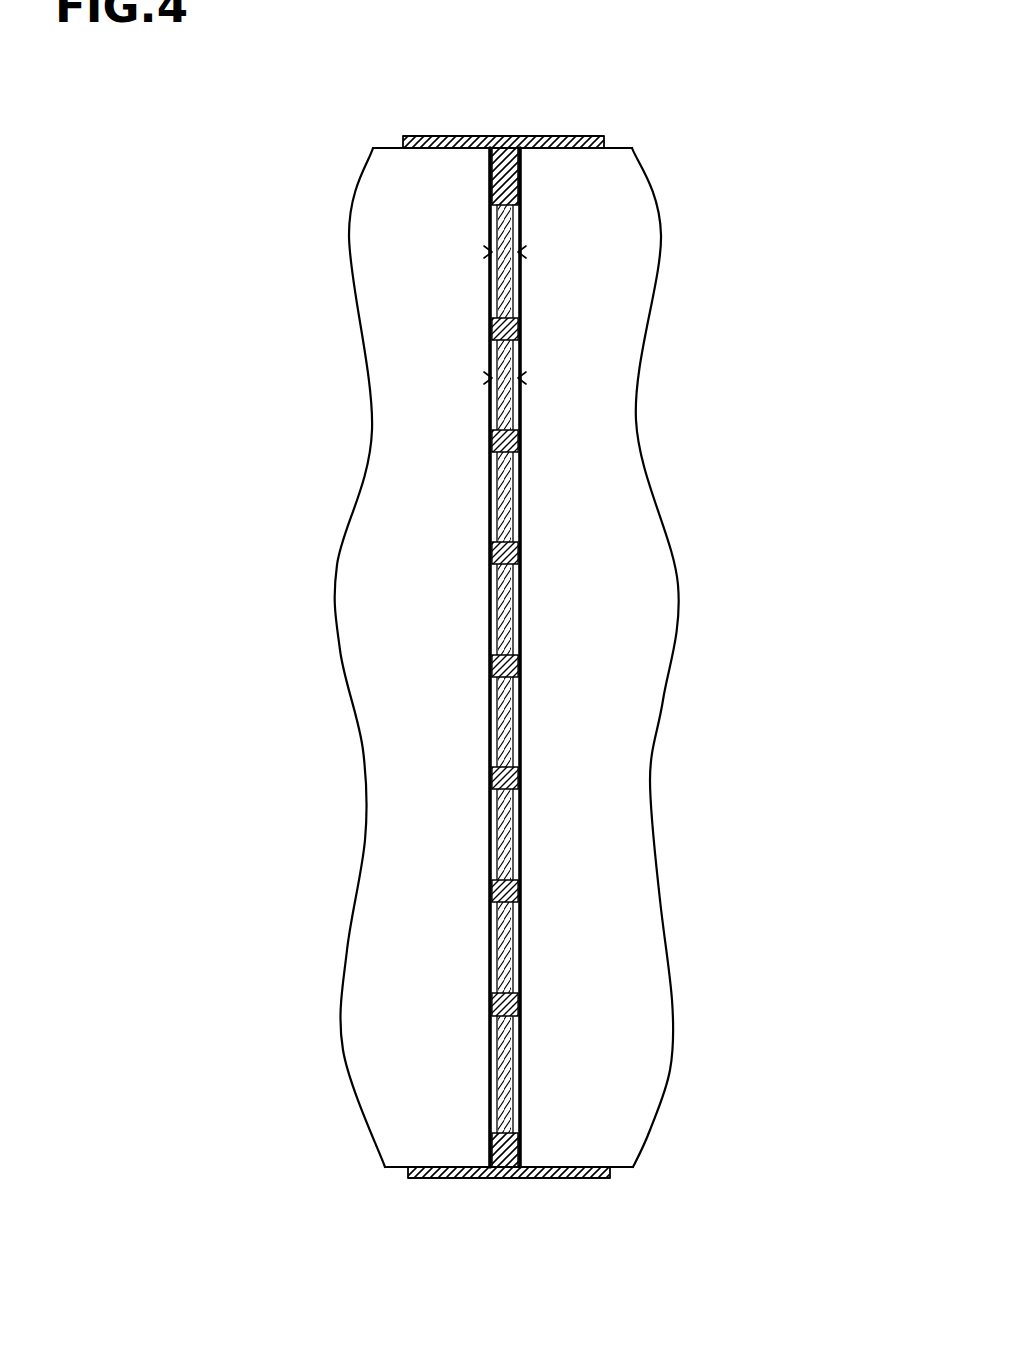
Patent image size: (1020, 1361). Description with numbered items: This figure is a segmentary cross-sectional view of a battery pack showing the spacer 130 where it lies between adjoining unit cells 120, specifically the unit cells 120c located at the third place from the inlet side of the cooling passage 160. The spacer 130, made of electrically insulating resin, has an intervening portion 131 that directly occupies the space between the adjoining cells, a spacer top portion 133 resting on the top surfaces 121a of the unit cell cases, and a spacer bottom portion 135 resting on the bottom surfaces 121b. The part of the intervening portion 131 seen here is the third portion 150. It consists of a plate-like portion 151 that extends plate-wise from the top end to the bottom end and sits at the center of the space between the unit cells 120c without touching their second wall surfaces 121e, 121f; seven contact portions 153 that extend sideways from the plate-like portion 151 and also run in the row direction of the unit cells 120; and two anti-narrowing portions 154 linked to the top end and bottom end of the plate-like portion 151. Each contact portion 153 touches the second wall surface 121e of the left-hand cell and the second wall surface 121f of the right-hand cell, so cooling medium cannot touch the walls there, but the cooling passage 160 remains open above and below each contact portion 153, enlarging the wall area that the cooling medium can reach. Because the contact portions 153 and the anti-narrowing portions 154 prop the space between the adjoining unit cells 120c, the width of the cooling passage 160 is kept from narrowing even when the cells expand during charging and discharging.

The unit cell 120 is at (500, 657).
The unit cell at the third place from the inlet side 120c is at (372, 683).
The top surface 121a is at (383, 144).
The bottom surface 121b is at (393, 1170).
The second side surface 121e is at (491, 953).
The second side surface 121f is at (525, 1075).
The spacer 130 is at (532, 653).
The intervening portion 131 is at (537, 669).
The third portion 150 is at (498, 669).
The spacer top portion 133 is at (437, 135).
The spacer bottom portion 135 is at (450, 1180).
The plate-like portion 151 is at (491, 495).
The contact portion 153 is at (523, 890).
The anti-narrowing portion 154 is at (523, 172).
The cooling passage 160 is at (489, 378).